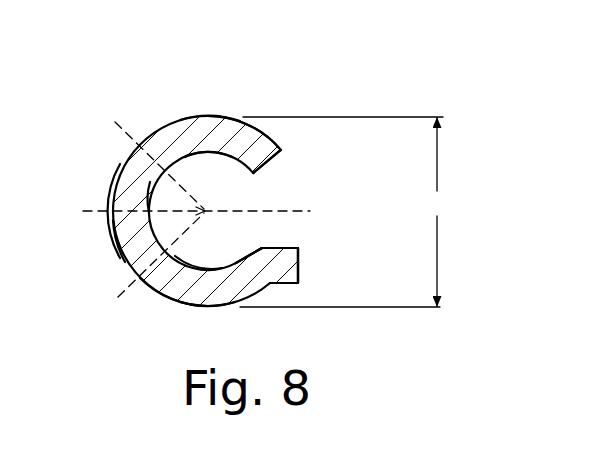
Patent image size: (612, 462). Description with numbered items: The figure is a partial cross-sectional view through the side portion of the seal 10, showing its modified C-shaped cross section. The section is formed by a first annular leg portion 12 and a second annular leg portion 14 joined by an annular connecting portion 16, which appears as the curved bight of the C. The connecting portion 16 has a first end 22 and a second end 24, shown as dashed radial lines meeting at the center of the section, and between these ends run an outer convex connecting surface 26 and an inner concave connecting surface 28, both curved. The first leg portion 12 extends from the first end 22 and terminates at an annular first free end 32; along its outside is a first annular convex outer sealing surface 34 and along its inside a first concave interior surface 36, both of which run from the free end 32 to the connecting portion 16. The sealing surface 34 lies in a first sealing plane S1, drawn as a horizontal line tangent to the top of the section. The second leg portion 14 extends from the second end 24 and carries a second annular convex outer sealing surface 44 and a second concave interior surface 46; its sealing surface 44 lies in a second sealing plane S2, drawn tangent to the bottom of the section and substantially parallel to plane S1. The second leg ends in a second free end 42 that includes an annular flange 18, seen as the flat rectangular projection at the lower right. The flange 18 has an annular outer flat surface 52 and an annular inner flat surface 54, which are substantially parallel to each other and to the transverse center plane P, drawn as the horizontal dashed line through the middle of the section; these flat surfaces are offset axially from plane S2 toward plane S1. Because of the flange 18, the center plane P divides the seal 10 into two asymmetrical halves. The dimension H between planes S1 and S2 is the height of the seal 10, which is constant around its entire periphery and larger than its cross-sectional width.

The seal 10 is at (251, 79).
The first annular leg portion 12 is at (176, 117).
The second annular leg portion 14 is at (156, 297).
The annular connecting portion 16 is at (112, 195).
The annular flange 18 is at (289, 245).
The first end 22 is at (139, 144).
The second end 24 is at (140, 278).
The outer convex connecting surface 26 is at (112, 232).
The inner concave connecting surface 28 is at (155, 194).
The first free end 32 is at (282, 151).
The first annular convex outer sealing surface 34 is at (213, 117).
The first concave interior surface 36 is at (208, 153).
The second free end 42 is at (299, 266).
The second annular convex outer sealing surface 44 is at (205, 307).
The second concave interior surface 46 is at (190, 263).
The annular outer flat surface 52 is at (288, 284).
The annular inner flat surface 54 is at (294, 249).
The center plane P is at (300, 210).
The first sealing plane S1 is at (348, 117).
The second sealing plane S2 is at (343, 307).
The height H is at (437, 212).